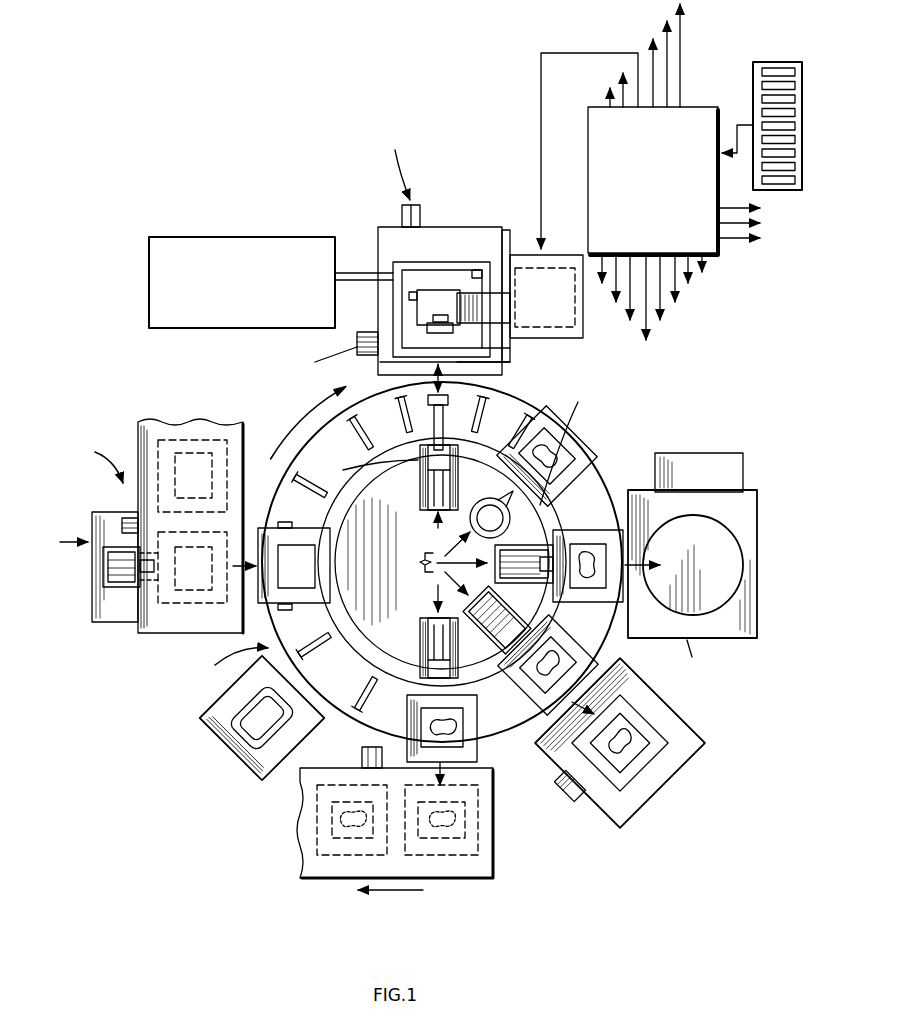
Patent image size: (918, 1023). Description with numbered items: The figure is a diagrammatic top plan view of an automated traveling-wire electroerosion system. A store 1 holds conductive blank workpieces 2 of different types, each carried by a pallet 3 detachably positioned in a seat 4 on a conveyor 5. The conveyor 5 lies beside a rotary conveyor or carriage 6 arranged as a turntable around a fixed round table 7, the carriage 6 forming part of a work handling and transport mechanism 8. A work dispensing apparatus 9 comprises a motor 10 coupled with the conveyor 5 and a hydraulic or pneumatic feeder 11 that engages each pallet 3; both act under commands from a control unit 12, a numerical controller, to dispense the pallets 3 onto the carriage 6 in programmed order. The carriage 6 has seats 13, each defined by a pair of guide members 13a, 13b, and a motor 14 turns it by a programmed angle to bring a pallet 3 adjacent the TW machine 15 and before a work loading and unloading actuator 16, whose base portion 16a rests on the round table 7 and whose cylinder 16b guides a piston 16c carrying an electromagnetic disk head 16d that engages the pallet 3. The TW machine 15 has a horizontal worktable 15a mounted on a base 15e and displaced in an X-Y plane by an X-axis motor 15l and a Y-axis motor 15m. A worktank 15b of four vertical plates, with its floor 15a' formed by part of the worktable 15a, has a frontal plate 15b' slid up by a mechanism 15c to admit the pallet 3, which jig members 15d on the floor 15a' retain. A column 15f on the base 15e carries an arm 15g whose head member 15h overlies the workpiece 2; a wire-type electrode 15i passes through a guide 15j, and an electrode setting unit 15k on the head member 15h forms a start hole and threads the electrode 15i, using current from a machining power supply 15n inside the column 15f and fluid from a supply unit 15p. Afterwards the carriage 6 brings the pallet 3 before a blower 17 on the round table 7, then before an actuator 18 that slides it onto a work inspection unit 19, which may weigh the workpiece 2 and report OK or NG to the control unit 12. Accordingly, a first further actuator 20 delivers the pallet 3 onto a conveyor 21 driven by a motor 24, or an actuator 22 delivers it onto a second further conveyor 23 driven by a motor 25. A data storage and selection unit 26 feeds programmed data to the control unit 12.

The store 1 is at (102, 460).
The workpiece 2 is at (193, 420).
The pallet 3 is at (165, 420).
The seat 4 is at (310, 568).
The conveyor 5 is at (245, 425).
The rotary conveyor or carriage 6 is at (510, 728).
The round table 7 is at (535, 530).
The work handling and transport mechanism 8 is at (235, 667).
The work dispensing apparatus 9 is at (91, 567).
The motor 10 is at (123, 520).
The feeder 11 is at (127, 575).
The control unit 12 is at (588, 170).
The seat 13 is at (270, 612).
The guide member 13a is at (298, 522).
The guide member 13b is at (300, 611).
The motor 14 is at (268, 748).
The TW machine 15 is at (377, 222).
The worktable 15a is at (427, 271).
The floor 15a' is at (442, 270).
The worktank 15b is at (477, 276).
The frontal plate 15b' is at (499, 381).
The mechanism 15c is at (383, 350).
The jig members 15d is at (410, 294).
The base 15e is at (505, 243).
The column 15f is at (557, 254).
The arm 15g is at (500, 360).
The head member 15h is at (430, 300).
The wire-type electrode 15i is at (433, 318).
The guide 15j is at (447, 312).
The electrode setting unit 15k is at (501, 227).
The X-axis motor 15l is at (443, 232).
The Y-axis motor 15m is at (496, 143).
The machining power supply 15n is at (577, 340).
The machining fluid supply unit 15p is at (189, 237).
The work loading and unloading actuator 16 is at (462, 470).
The base portion 16a is at (420, 500).
The cylinder 16b is at (365, 468).
The piston 16c is at (467, 415).
The disk head 16d is at (414, 415).
The blower 17 is at (488, 499).
The actuator 18 is at (522, 570).
The work inspection unit 19 is at (755, 483).
The first further actuator 20 is at (490, 638).
The conveyor 21 is at (658, 768).
The actuator 22 is at (430, 640).
The second further conveyor 23 is at (328, 865).
The drive motor 24 is at (558, 782).
The drive motor 25 is at (362, 758).
The data storage and selection unit 26 is at (768, 62).